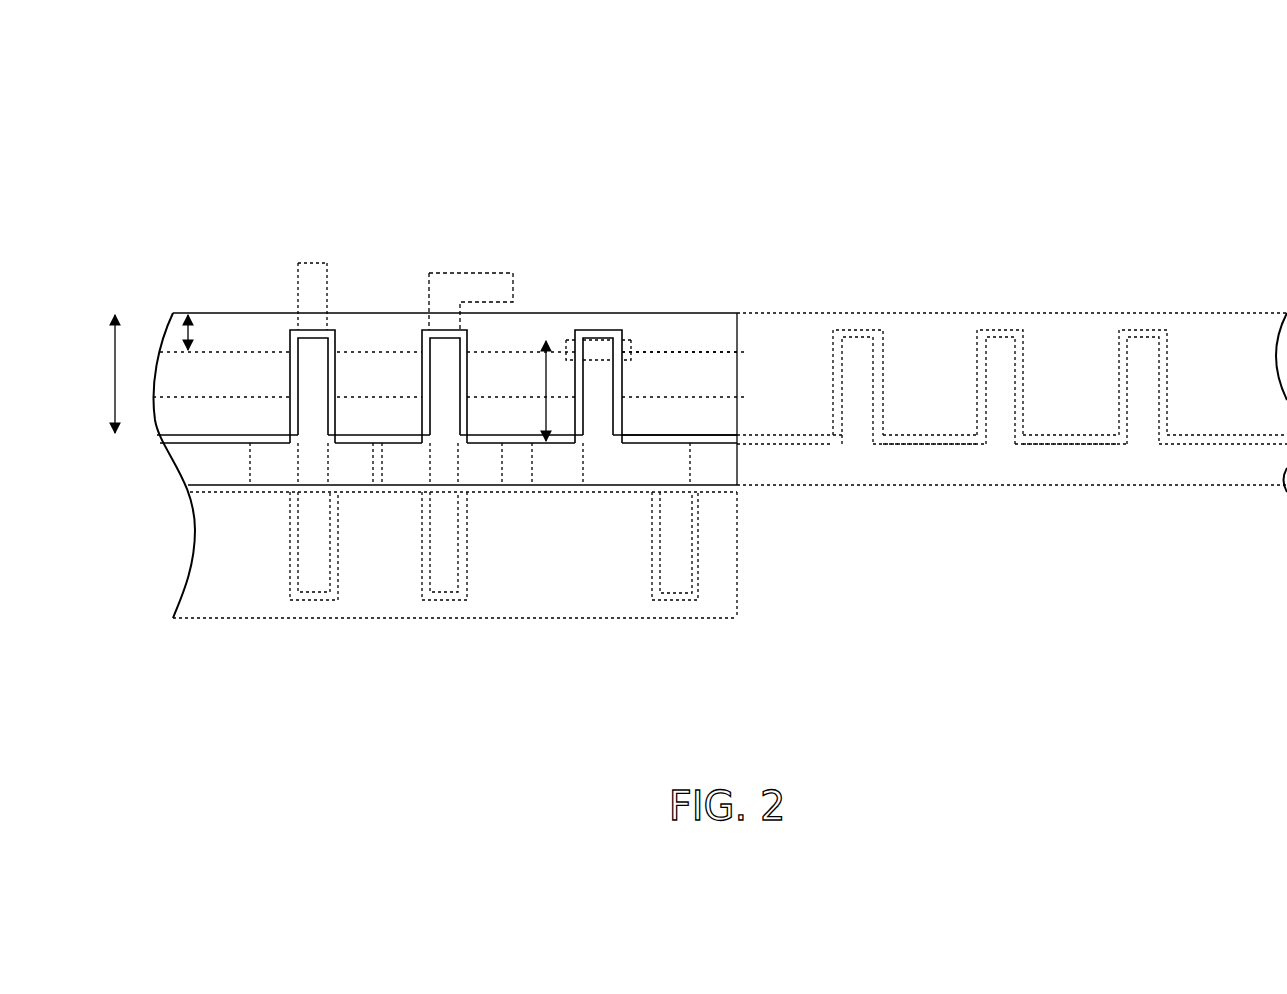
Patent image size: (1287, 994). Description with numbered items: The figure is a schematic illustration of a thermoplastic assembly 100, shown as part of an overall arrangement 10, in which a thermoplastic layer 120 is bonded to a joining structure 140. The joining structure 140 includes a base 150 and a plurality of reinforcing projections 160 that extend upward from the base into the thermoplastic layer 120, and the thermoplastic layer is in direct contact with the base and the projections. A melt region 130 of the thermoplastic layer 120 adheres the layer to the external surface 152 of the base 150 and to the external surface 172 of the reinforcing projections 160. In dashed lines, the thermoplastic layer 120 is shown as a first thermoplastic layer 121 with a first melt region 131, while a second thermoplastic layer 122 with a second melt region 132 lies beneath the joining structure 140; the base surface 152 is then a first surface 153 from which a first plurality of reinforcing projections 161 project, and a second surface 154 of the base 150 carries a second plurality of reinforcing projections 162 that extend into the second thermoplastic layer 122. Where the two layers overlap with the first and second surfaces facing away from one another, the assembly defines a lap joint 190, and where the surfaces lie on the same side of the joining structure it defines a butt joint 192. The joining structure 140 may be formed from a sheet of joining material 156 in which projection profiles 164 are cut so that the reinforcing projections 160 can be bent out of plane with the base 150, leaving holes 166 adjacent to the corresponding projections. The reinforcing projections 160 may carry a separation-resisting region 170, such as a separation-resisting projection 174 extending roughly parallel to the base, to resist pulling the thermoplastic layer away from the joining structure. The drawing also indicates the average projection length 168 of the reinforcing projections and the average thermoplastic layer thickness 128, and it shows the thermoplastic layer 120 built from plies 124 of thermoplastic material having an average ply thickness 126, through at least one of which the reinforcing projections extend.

The semiconductor device 10 is at (188, 98).
The thermoplastic assembly 100 is at (215, 148).
The thermoplastic layer 120 is at (652, 311).
The first thermoplastic layer 121 is at (718, 310).
The second thermoplastic layer 122 is at (927, 330).
The plies 124 is at (148, 405).
The average ply thickness 126 is at (190, 332).
The average thermoplastic layer thickness 128 is at (113, 375).
The melt region 130 is at (207, 432).
The first melt region 131 is at (273, 427).
The second melt region 132 is at (245, 505).
The joining structure 140 is at (171, 463).
The base 150 is at (520, 440).
The surface of base 152 is at (673, 433).
The first surface of base 153 is at (703, 433).
The second surface of base 154 is at (921, 433).
The sheet of joining material 156 is at (210, 466).
The reinforcing projections 160 is at (290, 366).
The first plurality of reinforcing projections 161 is at (418, 383).
The second plurality of reinforcing projections 162 is at (833, 367).
The projection profiles 164 is at (695, 465).
The holes 166 is at (408, 455).
The average projection length 168 is at (546, 338).
The separation-resisting region 170 is at (641, 347).
The surface of reinforcing projections 172 is at (462, 418).
The separation-resisting projection 174 is at (638, 347).
The lap joint 190 is at (840, 465).
The butt joint 192 is at (737, 250).